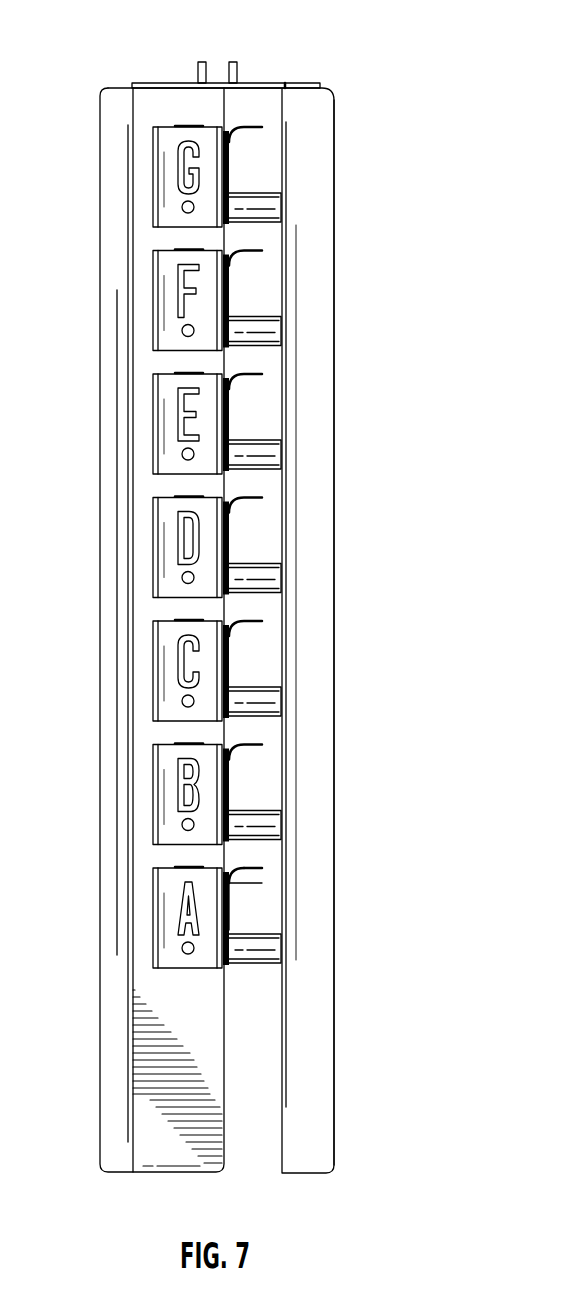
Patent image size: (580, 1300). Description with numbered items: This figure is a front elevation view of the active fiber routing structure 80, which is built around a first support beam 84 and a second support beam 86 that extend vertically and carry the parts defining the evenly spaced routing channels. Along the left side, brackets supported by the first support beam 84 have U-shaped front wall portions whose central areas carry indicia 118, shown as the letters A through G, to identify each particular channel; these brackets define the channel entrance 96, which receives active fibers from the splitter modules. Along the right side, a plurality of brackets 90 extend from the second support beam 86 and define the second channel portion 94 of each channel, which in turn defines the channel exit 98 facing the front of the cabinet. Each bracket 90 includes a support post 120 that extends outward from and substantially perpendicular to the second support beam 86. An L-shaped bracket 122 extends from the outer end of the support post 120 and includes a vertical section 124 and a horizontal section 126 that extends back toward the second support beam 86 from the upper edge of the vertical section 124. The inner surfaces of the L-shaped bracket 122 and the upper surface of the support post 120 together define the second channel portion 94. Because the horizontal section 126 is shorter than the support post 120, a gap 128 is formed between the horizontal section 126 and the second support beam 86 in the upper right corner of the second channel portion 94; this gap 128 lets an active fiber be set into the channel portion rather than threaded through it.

The structure 80 is at (322, 47).
The first support beam 84 is at (122, 98).
The second support beam 86 is at (323, 108).
The bracket 90 is at (296, 968).
The second channel portion 94 is at (262, 900).
The entrance 96 is at (150, 906).
The exit 98 is at (266, 920).
The indicia 118 is at (173, 937).
The support post 120 is at (253, 953).
The L-shaped bracket 122 is at (222, 864).
The vertical section 124 is at (227, 905).
The horizontal section 126 is at (243, 863).
The gap 128 is at (270, 866).